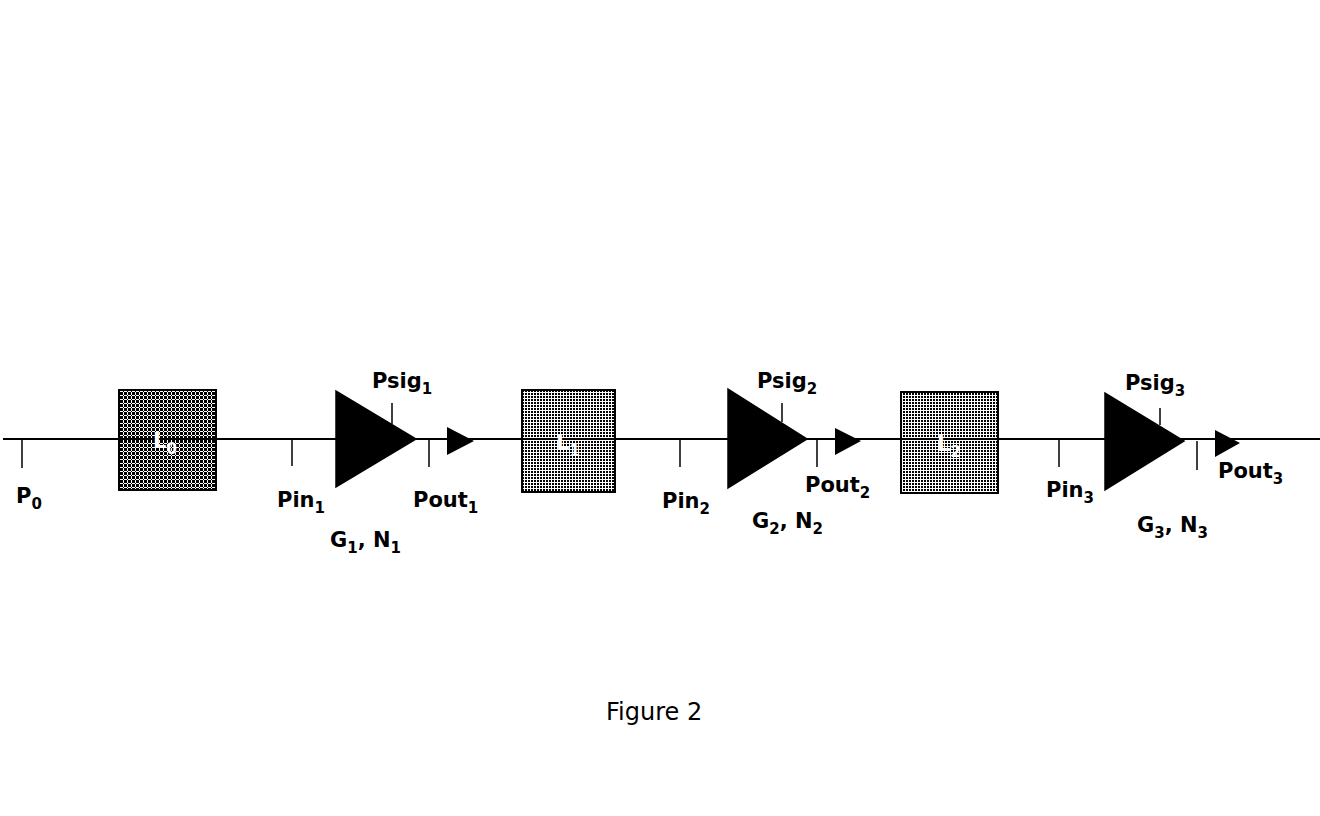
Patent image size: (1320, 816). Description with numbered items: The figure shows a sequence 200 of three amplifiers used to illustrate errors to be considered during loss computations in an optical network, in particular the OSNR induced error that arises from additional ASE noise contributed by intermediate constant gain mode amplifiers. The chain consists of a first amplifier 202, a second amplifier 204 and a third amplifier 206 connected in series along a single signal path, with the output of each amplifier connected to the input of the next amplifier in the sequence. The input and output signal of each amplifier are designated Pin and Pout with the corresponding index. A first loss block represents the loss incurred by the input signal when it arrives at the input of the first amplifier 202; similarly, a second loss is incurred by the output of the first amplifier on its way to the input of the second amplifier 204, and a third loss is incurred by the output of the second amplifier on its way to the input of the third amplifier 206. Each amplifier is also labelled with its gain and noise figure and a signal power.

The optical transmission link with cascaded amplifier stages 200 is at (884, 214).
The amplifier A1 202 is at (340, 391).
The amplifier A2 204 is at (747, 398).
The amplifier A3 206 is at (1112, 393).